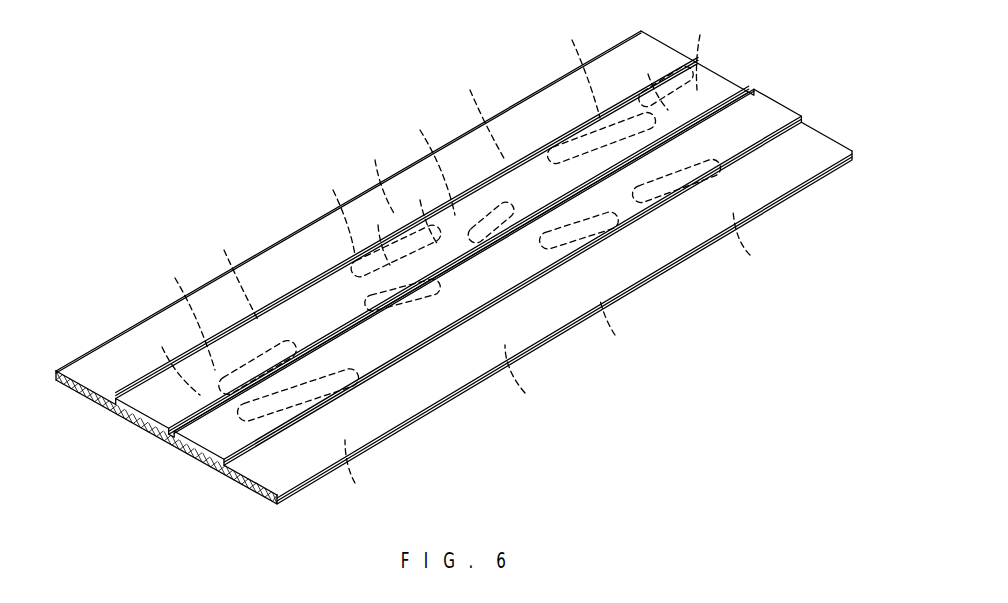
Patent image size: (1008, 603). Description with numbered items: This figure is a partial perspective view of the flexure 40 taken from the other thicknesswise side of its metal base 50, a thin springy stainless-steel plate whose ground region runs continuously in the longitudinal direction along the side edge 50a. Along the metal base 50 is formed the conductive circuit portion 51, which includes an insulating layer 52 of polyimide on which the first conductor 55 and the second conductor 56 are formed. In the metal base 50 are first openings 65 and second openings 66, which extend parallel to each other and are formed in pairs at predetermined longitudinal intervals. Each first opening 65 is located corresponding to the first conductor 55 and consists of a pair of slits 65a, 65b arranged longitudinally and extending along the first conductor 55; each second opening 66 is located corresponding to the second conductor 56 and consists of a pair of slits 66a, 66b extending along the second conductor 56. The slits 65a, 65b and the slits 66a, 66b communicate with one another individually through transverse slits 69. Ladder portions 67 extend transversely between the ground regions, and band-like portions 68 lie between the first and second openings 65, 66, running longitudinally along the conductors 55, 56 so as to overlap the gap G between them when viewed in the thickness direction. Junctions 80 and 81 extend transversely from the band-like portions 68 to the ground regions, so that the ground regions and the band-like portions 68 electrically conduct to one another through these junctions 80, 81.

The flexure 40 is at (650, 293).
The metal base 50 is at (205, 460).
The side edge 50a is at (773, 213).
The conductive circuit portion 51 is at (752, 63).
The insulating layer 52 is at (520, 330).
The first conductor 55 is at (240, 440).
The second conductor 56 is at (150, 400).
The first openings 65 is at (692, 210).
The slit 65a is at (638, 314).
The slit 65b is at (488, 404).
The second openings 66 is at (560, 130).
The slit 66a is at (455, 135).
The slit 66b is at (303, 238).
The ladder portions 67 is at (539, 112).
The band-like portions 68 is at (357, 193).
The slits 69 is at (407, 222).
The junction 80 is at (425, 365).
The junction 81 is at (540, 155).
The gap G is at (296, 240).